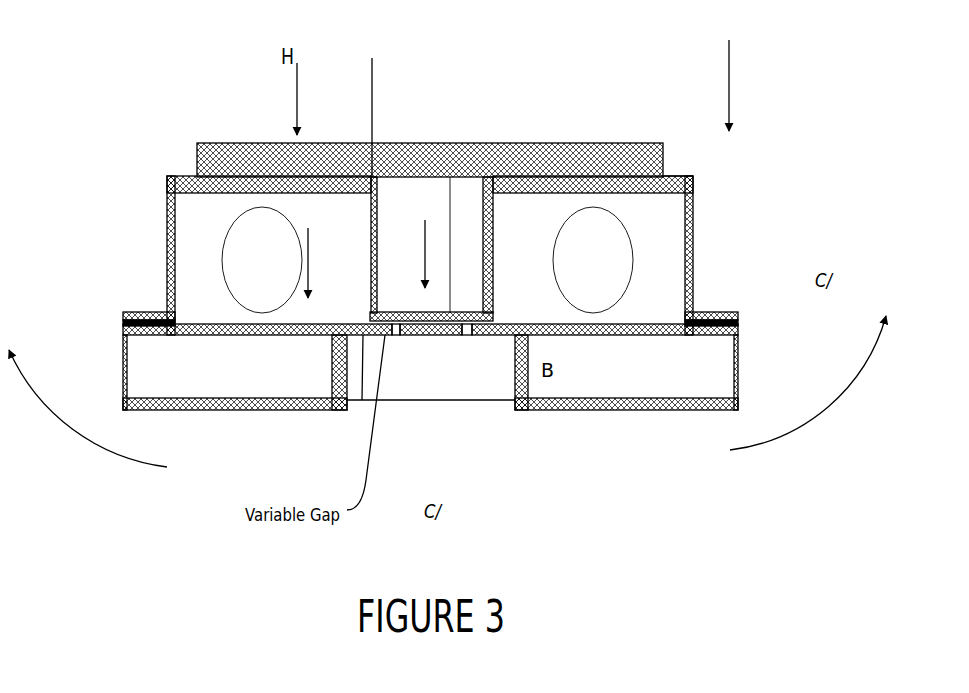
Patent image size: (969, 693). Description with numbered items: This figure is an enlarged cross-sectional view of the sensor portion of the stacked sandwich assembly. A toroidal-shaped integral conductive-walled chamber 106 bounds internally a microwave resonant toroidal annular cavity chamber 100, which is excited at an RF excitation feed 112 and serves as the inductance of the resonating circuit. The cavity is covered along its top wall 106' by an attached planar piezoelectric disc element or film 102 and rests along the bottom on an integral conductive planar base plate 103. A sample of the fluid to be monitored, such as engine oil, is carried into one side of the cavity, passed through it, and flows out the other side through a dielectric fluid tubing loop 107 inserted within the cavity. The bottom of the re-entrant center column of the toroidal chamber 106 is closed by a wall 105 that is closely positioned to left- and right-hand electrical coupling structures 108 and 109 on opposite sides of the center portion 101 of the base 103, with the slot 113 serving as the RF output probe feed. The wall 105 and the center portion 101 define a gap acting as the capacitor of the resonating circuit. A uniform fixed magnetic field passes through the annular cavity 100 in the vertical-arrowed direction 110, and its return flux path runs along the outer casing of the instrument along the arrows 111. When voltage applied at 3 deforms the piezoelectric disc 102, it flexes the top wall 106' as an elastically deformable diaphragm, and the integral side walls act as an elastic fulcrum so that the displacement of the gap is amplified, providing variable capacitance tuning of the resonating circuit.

The applied voltage input 3 is at (372, 78).
The microwave resonant toroidal annular cavity chamber 100 is at (186, 264).
The center portion of the base 101 is at (448, 400).
The piezoelectric disc element or film 102 is at (197, 153).
The conductive planar base plate 103 is at (680, 337).
The wall closing the re-entrant center column 105 is at (460, 143).
The toroidal-shaped integral conductive-walled chamber 106 is at (105, 270).
The top wall 106' is at (693, 94).
The dielectric fluid tubing loop 107 is at (155, 375).
The left-hand electrical coupling structure 108 is at (328, 335).
The right-hand electrical coupling structure 109 is at (530, 335).
The vertical-arrowed direction of magnetic field 110 is at (733, 72).
The return magnetic flux path arrows 111 is at (447, 391).
The RF excitation feed 112 is at (363, 335).
The slot 113 is at (492, 335).